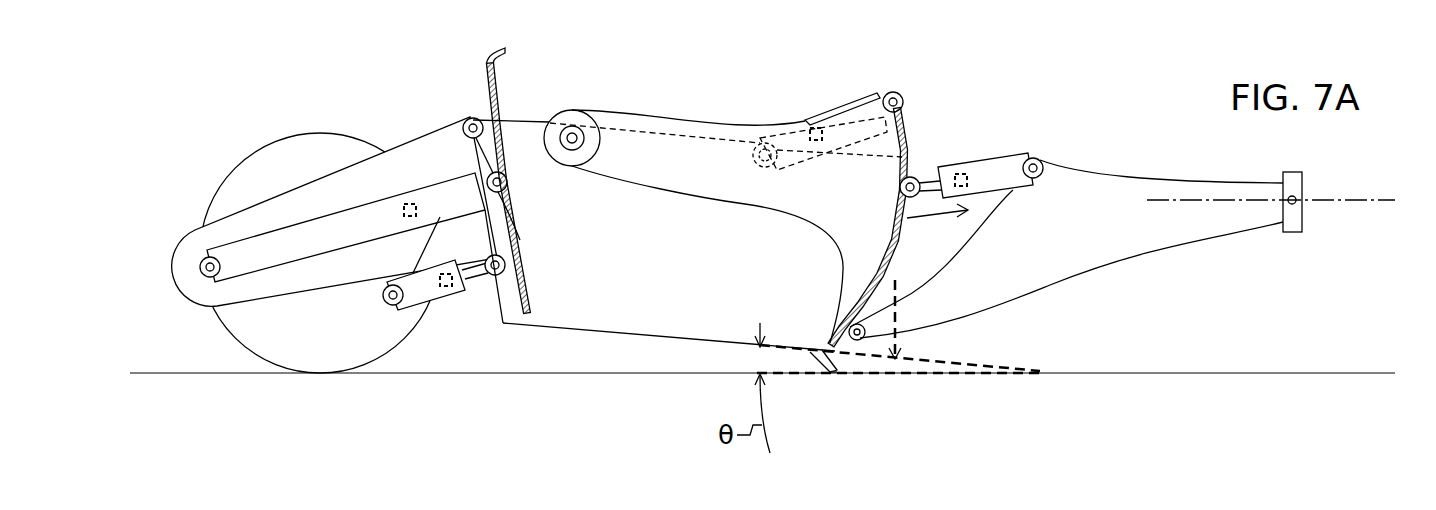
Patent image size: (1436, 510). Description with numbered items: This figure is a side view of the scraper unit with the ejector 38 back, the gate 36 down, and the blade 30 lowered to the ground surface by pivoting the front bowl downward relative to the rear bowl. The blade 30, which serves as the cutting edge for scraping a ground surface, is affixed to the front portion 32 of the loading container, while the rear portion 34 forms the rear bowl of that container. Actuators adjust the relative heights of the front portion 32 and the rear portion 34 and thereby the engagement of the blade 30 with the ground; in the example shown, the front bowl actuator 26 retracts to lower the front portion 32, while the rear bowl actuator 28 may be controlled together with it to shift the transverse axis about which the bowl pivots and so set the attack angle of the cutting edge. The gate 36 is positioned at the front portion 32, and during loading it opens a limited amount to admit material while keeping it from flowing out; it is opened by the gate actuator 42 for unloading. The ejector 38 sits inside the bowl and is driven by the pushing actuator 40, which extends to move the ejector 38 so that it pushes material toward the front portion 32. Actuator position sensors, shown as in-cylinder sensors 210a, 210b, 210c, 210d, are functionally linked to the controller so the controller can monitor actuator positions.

The front bowl actuator 26 is at (1010, 160).
The rear bowl actuator 28 is at (413, 290).
The blade 30 is at (833, 365).
The front portion 32 is at (803, 318).
The rear portion 34 is at (542, 298).
The gate 36 is at (907, 132).
The ejector 38 is at (503, 50).
The pushing actuator 40 is at (337, 227).
The gate actuator 42 is at (845, 98).
The in-cylinder sensor 210a is at (450, 293).
The in-cylinder sensor 210b is at (968, 180).
The in-cylinder sensor 210c is at (812, 122).
The in-cylinder sensor 210d is at (407, 202).